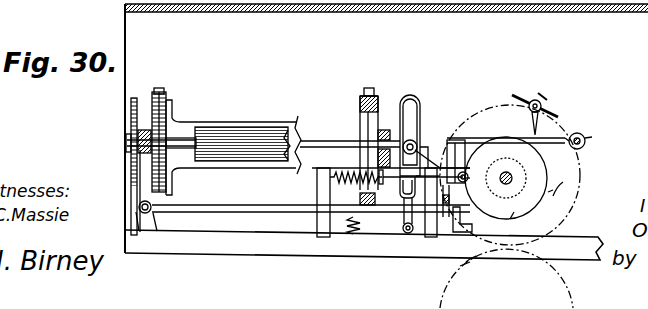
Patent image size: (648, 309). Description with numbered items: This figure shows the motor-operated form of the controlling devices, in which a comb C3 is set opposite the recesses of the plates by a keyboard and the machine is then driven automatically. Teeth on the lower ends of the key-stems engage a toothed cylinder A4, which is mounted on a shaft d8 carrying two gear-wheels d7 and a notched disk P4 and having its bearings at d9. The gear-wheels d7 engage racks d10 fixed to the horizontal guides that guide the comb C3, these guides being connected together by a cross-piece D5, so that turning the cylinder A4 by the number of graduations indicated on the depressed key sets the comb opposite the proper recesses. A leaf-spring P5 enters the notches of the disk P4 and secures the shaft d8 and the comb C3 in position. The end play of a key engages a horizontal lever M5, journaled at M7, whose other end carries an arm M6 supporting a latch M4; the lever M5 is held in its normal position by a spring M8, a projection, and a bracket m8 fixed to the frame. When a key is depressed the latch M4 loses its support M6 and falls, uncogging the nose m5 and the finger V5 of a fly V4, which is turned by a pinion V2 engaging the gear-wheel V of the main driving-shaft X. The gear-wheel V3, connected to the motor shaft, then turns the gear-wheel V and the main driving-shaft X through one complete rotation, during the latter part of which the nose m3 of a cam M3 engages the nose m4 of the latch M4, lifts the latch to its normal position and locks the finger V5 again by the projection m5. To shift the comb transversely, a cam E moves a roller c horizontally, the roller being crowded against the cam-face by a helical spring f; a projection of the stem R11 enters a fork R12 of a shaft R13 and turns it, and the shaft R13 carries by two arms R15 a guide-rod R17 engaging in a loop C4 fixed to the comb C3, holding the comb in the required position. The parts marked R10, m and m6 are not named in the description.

The notched disk P4 is at (131, 108).
The leaf-spring P5 is at (110, 158).
The gear-wheels d7 is at (165, 114).
The shaft d8 is at (187, 152).
The bearings d9 is at (145, 128).
The racks d10 is at (160, 90).
The cross-piece D5 is at (185, 130).
The toothed cylinder A4 is at (246, 140).
The comb C3 is at (325, 145).
The loop C4 is at (409, 98).
The post R10 is at (323, 193).
The stem R11 is at (416, 176).
The fork R12 is at (403, 185).
The shaft R13 is at (404, 230).
The arms R15 is at (420, 160).
The guide-rod R17 is at (417, 148).
The helical spring f is at (396, 187).
The roller c is at (443, 202).
The rod m is at (446, 210).
The cam M3 is at (521, 225).
The latch M4 is at (478, 138).
The horizontal lever M5 is at (243, 206).
The arm M6 is at (450, 152).
The journal M7 is at (148, 222).
The spring M8 is at (350, 222).
The nose m3 is at (515, 174).
The nose m4 is at (503, 124).
The nose m5 is at (545, 133).
The pin m6 is at (592, 138).
The bracket m8 is at (470, 202).
The gear-wheel V is at (576, 207).
The pinion V2 is at (548, 103).
The gear-wheel V3 is at (548, 279).
The fly V4 is at (526, 98).
The finger V5 is at (542, 124).
The cam E is at (550, 166).
The main driving-shaft X is at (517, 180).